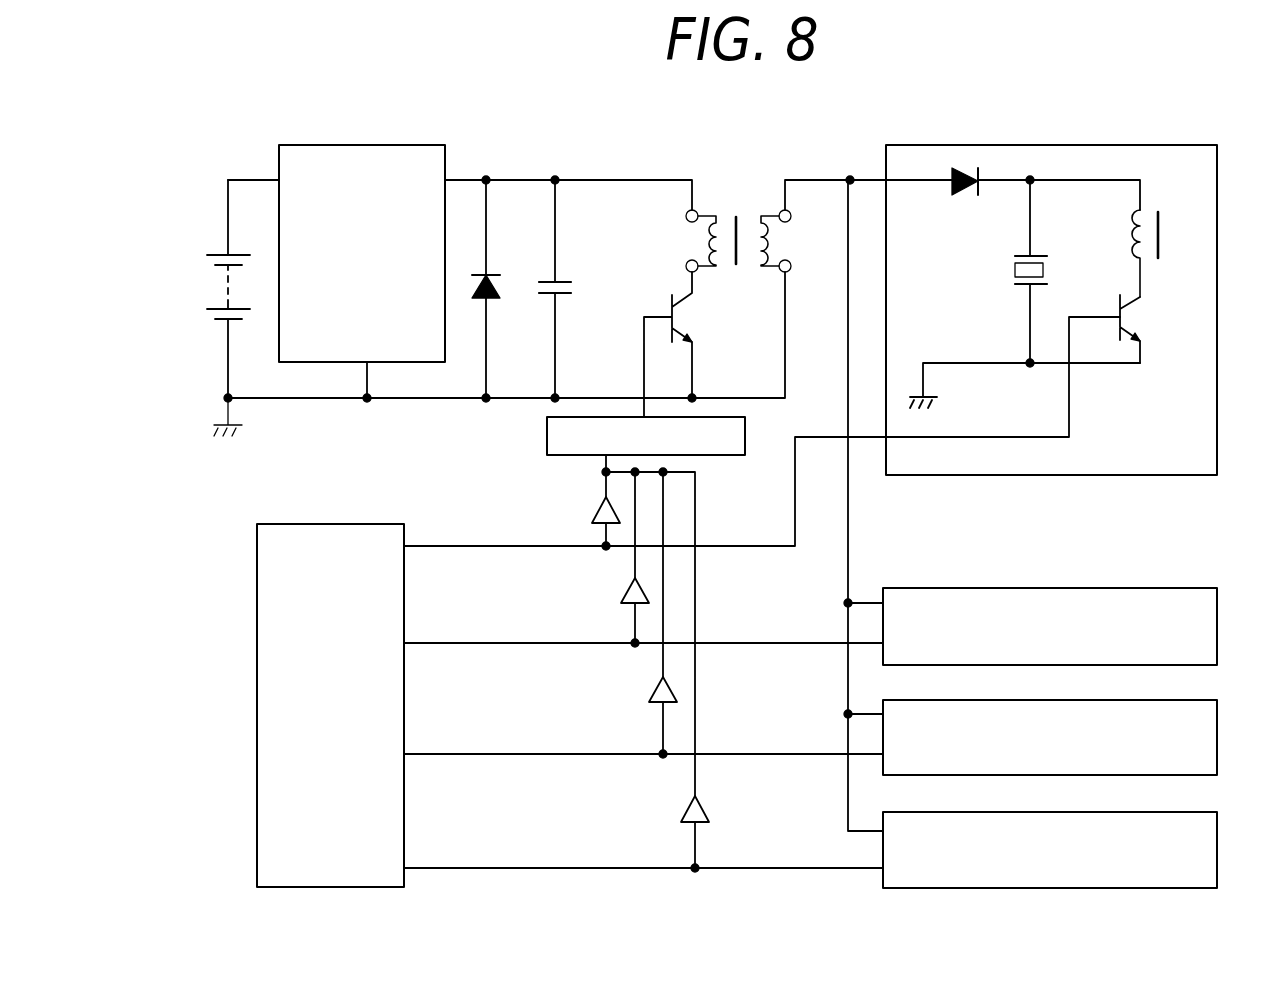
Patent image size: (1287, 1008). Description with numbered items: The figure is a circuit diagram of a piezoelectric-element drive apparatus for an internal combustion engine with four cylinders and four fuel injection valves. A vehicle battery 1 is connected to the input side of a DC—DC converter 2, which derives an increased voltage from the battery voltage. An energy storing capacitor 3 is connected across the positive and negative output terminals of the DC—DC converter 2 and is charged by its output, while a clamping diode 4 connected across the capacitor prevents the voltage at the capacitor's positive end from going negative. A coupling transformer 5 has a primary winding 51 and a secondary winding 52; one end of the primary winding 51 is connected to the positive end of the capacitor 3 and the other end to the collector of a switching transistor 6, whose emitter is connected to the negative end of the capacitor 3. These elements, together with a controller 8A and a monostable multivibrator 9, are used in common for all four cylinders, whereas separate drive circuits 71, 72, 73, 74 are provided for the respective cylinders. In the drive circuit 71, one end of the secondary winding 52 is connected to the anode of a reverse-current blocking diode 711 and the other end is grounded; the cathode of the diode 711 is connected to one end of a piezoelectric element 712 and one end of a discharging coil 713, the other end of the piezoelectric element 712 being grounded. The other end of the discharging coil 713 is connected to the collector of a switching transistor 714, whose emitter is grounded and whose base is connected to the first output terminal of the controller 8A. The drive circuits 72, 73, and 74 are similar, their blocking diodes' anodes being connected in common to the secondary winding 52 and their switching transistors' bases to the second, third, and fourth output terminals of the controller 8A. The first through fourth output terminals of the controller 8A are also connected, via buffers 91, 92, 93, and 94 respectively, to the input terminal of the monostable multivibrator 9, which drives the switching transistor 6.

The vehicle battery 1 is at (212, 244).
The DC—DC converter 2 is at (398, 145).
The energy storing capacitor 3 is at (562, 278).
The clamping diode 4 is at (494, 278).
The coupling transformer 5 is at (735, 214).
The primary winding 51 is at (690, 248).
The secondary winding 52 is at (780, 248).
The switching transistor 6 is at (697, 318).
The monostable multivibrator 9 is at (746, 434).
The controller 8A is at (350, 524).
The buffer 91 is at (594, 514).
The buffer 92 is at (622, 594).
The buffer 93 is at (650, 696).
The buffer 94 is at (680, 815).
The drive circuit 71 is at (1214, 164).
The reverse-current blocking diode 711 is at (966, 197).
The piezoelectric element 712 is at (1044, 268).
The discharging coil 713 is at (1160, 216).
The switching transistor 714 is at (1144, 318).
The drive circuit 72 is at (1214, 604).
The drive circuit 73 is at (1214, 717).
The drive circuit 74 is at (1214, 829).